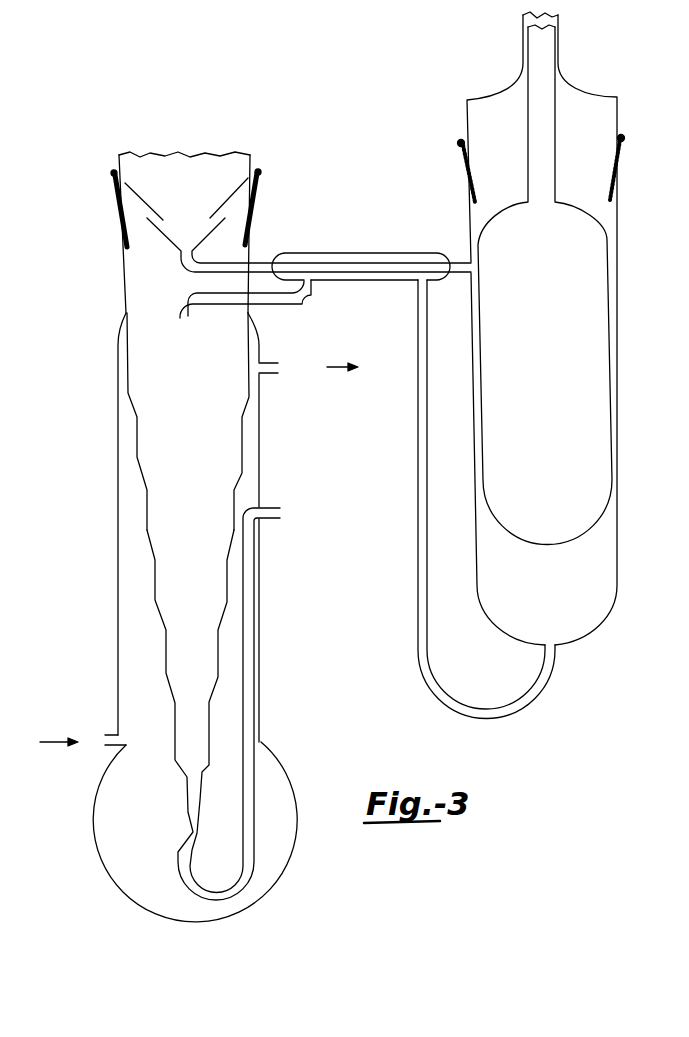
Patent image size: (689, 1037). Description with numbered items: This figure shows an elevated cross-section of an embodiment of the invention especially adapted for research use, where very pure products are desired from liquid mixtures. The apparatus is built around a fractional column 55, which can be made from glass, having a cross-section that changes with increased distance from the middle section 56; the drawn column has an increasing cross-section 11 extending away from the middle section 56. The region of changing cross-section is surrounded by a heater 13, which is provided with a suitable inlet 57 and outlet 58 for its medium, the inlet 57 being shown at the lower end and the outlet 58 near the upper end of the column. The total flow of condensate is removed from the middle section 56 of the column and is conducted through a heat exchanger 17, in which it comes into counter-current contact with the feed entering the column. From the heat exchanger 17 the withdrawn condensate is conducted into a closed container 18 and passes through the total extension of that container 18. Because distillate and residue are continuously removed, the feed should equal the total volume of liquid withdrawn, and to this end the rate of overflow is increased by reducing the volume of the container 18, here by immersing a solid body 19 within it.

The increasing cross-section 11 is at (147, 500).
The heater 13 is at (120, 628).
The heat exchanger 17 is at (163, 233).
The closed container 18 is at (138, 197).
The solid body 19 is at (598, 518).
The fractional column 55 is at (118, 412).
The middle section 56 is at (125, 283).
The inlet 57 is at (105, 740).
The outlet 58 is at (288, 363).